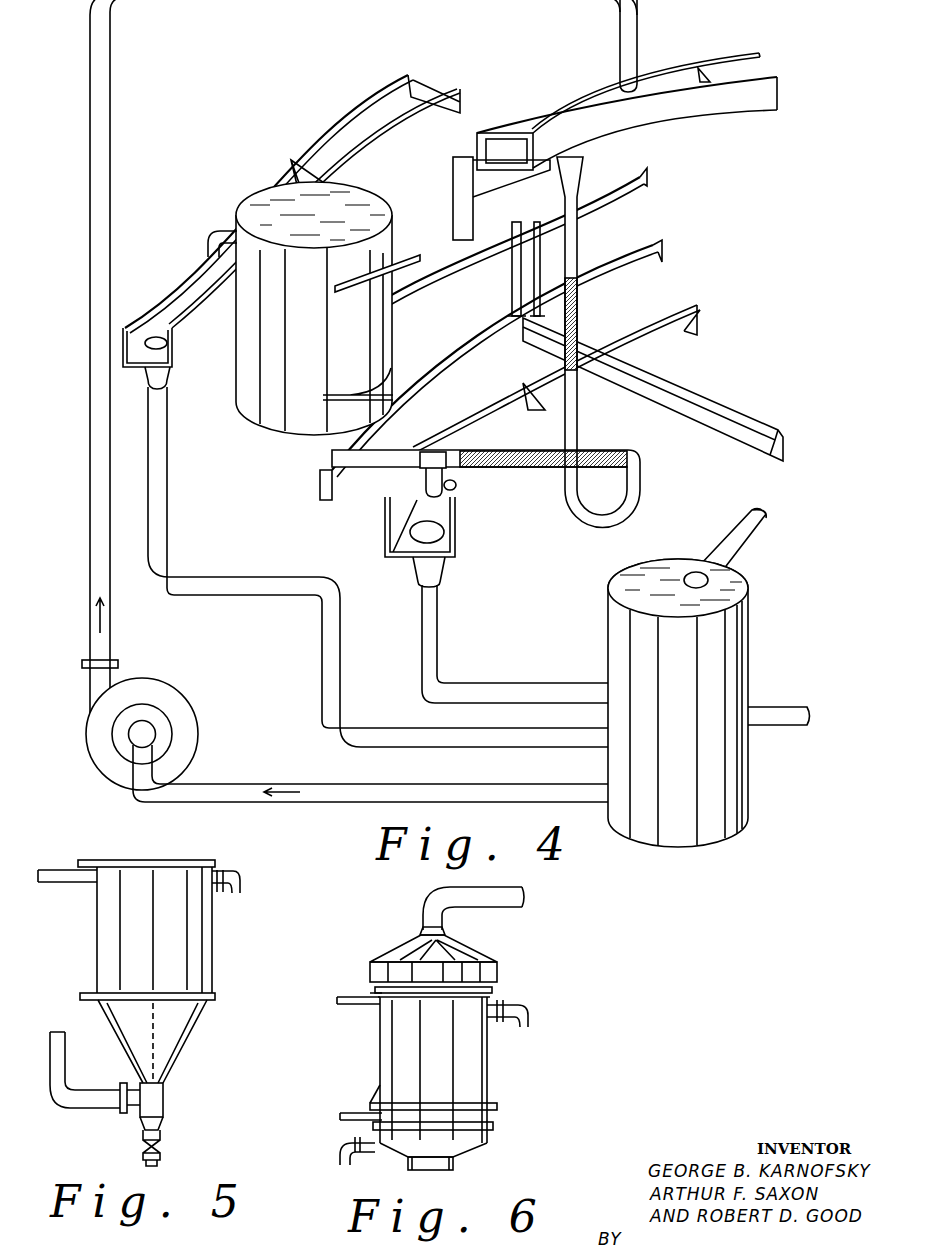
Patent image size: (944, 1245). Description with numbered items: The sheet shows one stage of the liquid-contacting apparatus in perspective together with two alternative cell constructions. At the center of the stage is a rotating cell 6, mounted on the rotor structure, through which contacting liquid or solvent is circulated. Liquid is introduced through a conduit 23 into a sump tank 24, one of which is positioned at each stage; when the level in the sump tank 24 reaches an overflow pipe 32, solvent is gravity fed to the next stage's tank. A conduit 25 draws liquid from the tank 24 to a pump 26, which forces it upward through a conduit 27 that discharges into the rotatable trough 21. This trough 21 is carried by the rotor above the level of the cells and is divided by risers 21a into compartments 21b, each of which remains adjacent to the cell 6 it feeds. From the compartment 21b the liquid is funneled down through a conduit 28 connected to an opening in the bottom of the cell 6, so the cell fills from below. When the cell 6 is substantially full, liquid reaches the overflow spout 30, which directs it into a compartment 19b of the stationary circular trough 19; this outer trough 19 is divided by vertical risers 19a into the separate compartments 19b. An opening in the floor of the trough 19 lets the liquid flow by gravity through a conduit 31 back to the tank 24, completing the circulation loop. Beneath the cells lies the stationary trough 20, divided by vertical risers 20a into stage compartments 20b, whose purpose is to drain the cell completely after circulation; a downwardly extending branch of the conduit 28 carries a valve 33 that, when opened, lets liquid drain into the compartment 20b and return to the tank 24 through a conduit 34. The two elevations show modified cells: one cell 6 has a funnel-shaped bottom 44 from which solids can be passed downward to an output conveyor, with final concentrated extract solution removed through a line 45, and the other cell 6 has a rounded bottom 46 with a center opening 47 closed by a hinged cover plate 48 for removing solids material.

In FIG. 4, the cell 6 is at (237, 398).
In FIG. 5, the cell 6 is at (212, 945).
In FIG. 6, the cell 6 is at (487, 1067).
In FIG. 4, the circular trough 19 is at (358, 117).
In FIG. 4, the vertical partitions or risers 19a is at (293, 170).
In FIG. 4, the compartments 19b is at (168, 297).
In FIG. 4, the stationary trough 20 is at (385, 542).
In FIG. 4, the vertical risers 20a is at (543, 383).
In FIG. 4, the stage compartments 20b is at (497, 407).
In FIG. 4, the rotatable trough 21 is at (683, 120).
In FIG. 4, the risers or dividers 21a is at (703, 70).
In FIG. 4, the compartments 21b is at (572, 107).
In FIG. 4, the conduit 23 is at (755, 543).
In FIG. 4, the sump tank 24 is at (740, 807).
In FIG. 4, the conduit 25 is at (548, 790).
In FIG. 4, the pump 26 is at (200, 735).
In FIG. 4, the conduit 27 is at (278, 0).
In FIG. 4, the conduit 28 is at (561, 494).
In FIG. 4, the overflow spout 30 is at (207, 243).
In FIG. 4, the conduit 31 is at (320, 615).
In FIG. 4, the overflow pipe 32 is at (790, 710).
In FIG. 4, the valve 33 is at (455, 488).
In FIG. 4, the conduit 34 is at (438, 642).
In FIG. 5, the bottom 44 is at (190, 1050).
In FIG. 5, the line 45 is at (165, 1145).
In FIG. 6, the rounded bottom 46 is at (492, 1145).
In FIG. 6, the center opening 47 is at (417, 1145).
In FIG. 6, the hinged cover plate 48 is at (437, 1170).